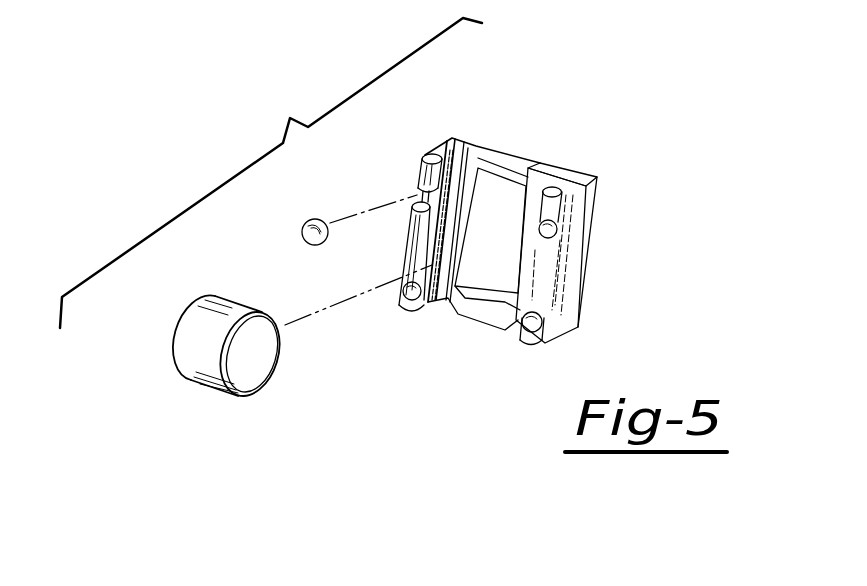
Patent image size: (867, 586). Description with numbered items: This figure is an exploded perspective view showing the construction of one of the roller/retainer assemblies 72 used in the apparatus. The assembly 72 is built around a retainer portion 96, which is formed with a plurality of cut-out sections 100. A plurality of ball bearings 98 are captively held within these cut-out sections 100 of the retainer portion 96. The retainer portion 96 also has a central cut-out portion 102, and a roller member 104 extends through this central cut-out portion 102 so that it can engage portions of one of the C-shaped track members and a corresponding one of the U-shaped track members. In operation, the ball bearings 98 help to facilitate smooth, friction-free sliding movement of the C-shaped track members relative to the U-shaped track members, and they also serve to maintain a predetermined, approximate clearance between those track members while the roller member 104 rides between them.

The roller/retainer assembly 72 is at (271, 173).
The retainer portion 96 is at (597, 161).
The ball bearings 98 is at (302, 230).
The cut-out sections 100 is at (420, 197).
The central cut-out portion 102 is at (498, 258).
The roller member 104 is at (208, 377).